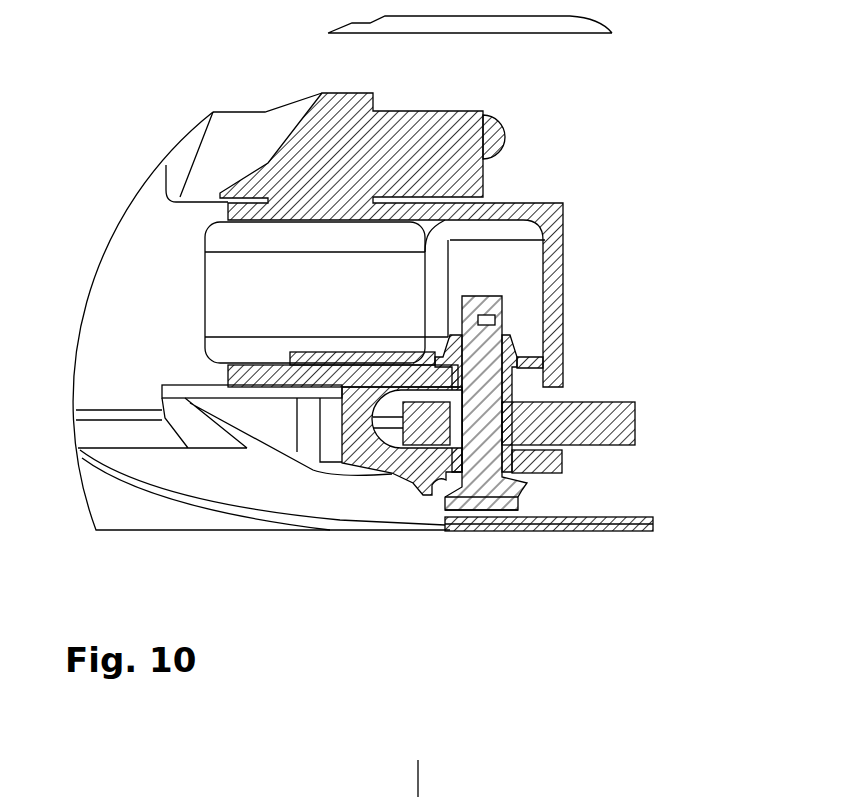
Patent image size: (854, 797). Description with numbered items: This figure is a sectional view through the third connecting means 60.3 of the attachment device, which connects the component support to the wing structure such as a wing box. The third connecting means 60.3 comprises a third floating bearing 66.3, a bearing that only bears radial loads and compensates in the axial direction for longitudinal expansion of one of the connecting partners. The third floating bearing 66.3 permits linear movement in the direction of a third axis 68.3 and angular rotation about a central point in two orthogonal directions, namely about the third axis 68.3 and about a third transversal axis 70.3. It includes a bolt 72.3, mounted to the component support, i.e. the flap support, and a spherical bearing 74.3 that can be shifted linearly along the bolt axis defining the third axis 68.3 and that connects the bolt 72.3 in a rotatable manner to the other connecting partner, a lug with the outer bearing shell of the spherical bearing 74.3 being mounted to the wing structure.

The third connecting means 60.3 is at (565, 270).
The third floating bearing 66.3 is at (540, 490).
The third axis 68.3 is at (455, 508).
The third transversal axis 70.3 is at (553, 423).
The bolt 72.3 is at (493, 508).
The spherical bearing 74.3 is at (448, 427).